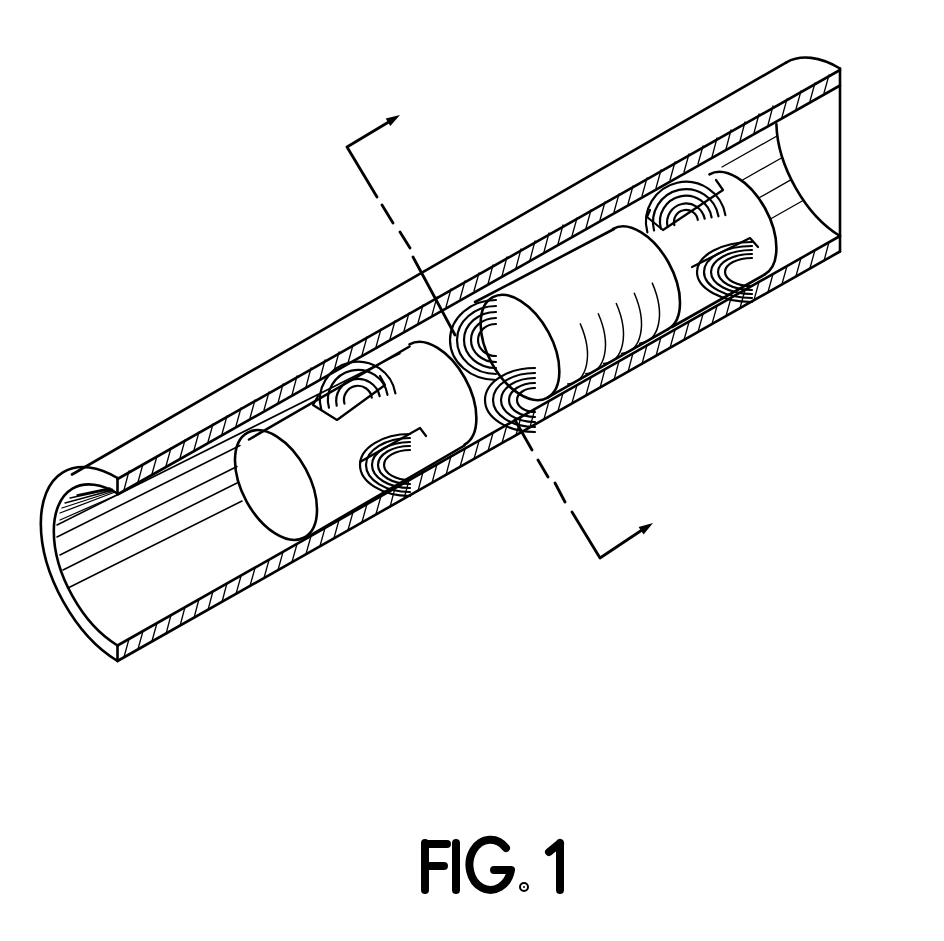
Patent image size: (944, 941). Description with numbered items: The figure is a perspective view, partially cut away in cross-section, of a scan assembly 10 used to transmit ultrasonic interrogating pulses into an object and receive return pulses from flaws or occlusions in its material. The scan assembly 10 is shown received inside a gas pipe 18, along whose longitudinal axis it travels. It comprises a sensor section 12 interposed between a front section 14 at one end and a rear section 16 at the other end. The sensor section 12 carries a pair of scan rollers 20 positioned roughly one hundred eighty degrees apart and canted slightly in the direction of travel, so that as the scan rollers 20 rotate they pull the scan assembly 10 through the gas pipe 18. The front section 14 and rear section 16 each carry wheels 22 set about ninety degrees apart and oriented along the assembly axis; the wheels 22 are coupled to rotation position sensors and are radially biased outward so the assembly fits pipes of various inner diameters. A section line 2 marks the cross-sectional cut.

The scan assembly 10 is at (535, 258).
The sensor section 12 is at (612, 255).
The front section 14 is at (298, 430).
The rear section 16 is at (748, 212).
The gas pipe 18 is at (783, 277).
The scan rollers 20 is at (487, 303).
The wheels 22 is at (388, 360).
The section line 2- 2 is at (513, 318).